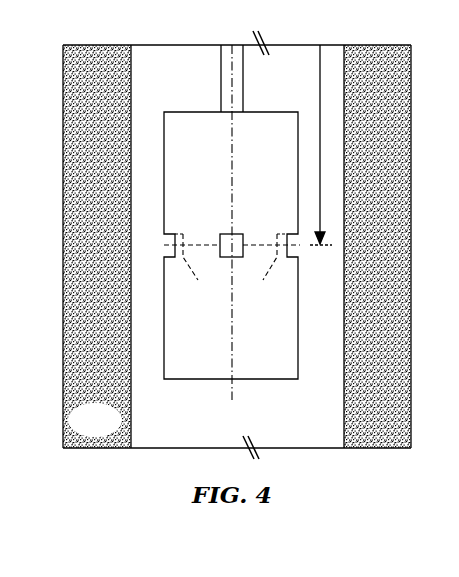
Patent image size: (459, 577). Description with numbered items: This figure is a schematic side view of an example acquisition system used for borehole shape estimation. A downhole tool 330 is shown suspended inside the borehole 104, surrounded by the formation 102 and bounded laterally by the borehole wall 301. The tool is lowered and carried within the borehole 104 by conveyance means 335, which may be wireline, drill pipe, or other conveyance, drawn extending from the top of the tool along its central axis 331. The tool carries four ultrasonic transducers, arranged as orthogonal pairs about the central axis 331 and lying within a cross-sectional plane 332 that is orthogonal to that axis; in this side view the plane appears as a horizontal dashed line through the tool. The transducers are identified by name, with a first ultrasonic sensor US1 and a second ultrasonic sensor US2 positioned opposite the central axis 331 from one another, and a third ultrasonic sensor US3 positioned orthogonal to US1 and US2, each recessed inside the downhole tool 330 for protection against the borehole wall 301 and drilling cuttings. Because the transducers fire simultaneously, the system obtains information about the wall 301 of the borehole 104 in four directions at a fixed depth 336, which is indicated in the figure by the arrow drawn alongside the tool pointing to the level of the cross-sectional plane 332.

The formation 102 is at (113, 432).
The borehole 104 is at (182, 432).
The wall 301 is at (343, 402).
The downhole tool 330 is at (247, 367).
The central axis 331 is at (231, 168).
The cross-sectional plane 332 is at (258, 240).
The conveyance means 335 is at (221, 100).
The fixed depth 336 is at (320, 100).
The first ultrasonic sensor US1 is at (265, 273).
The second ultrasonic sensor US2 is at (231, 273).
The third ultrasonic sensor US3 is at (218, 238).